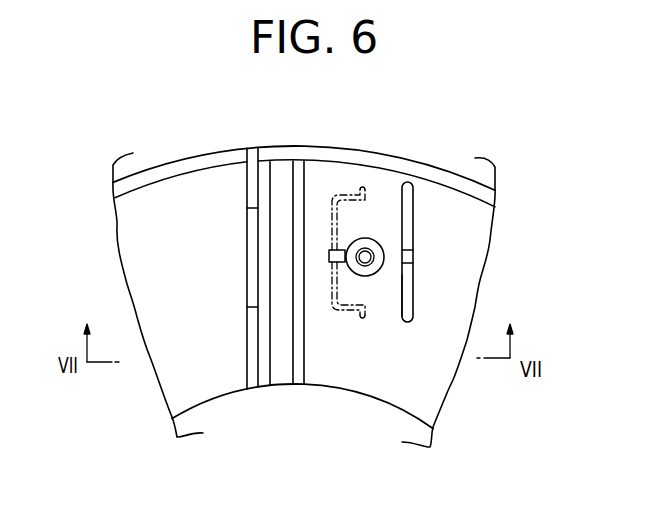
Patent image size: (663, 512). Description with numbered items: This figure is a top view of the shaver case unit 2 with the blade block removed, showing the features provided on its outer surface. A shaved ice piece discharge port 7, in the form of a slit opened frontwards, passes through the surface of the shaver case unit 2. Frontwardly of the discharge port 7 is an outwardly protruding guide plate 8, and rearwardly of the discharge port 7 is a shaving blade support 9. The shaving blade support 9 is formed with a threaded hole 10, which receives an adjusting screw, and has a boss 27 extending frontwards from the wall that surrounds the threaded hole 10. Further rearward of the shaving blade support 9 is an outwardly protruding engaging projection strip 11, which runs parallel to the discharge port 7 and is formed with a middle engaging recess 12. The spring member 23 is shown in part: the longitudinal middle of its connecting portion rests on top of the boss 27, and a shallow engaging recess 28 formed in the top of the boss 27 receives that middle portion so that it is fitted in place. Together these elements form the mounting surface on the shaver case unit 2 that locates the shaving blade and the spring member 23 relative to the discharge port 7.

The shaver case unit 2 is at (193, 198).
The shaved ice piece discharge port 7 is at (282, 372).
The guide plate 8 is at (248, 251).
The shaving blade support 9 is at (370, 276).
The threaded hole 10 is at (367, 253).
The engaging projection strip 11 is at (407, 295).
The engaging recess 12 is at (413, 252).
The spring member 23 is at (337, 196).
The boss 27 is at (337, 311).
The engaging recess 28 is at (329, 252).